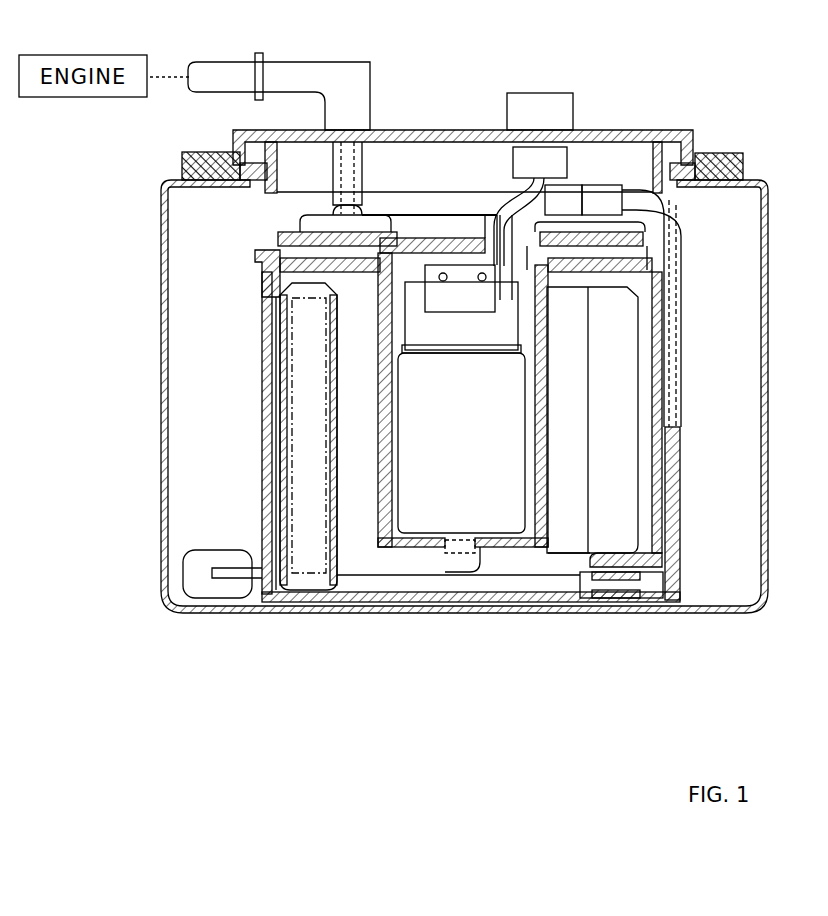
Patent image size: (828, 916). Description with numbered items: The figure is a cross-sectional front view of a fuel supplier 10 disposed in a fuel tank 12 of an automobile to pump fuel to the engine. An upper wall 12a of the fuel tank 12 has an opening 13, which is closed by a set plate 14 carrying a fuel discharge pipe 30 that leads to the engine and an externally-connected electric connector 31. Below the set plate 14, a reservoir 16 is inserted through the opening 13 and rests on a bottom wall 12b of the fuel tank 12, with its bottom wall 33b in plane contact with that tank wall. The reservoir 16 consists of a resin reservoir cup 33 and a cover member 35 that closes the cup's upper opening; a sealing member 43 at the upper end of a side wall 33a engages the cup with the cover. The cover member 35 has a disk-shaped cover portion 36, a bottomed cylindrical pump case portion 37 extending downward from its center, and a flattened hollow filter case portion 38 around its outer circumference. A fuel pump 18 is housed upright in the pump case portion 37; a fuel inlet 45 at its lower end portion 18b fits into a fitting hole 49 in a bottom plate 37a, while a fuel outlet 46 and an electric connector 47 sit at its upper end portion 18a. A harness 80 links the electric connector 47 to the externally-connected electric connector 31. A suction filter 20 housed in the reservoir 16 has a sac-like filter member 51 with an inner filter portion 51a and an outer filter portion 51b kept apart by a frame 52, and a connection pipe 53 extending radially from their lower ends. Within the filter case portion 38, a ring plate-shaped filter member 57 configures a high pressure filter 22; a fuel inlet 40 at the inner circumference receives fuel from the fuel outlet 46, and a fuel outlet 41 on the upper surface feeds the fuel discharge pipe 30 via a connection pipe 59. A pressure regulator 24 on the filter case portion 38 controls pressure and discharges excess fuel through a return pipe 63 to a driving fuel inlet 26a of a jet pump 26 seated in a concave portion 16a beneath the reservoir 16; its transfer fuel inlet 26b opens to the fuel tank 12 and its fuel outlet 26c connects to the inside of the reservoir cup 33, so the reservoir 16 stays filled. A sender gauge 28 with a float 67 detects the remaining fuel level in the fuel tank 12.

The fuel supplier 10 is at (486, 73).
The fuel tank 12 is at (767, 237).
The upper wall 12a is at (197, 173).
The bottom wall 12b is at (225, 614).
The opening 13 is at (272, 162).
The set plate 14 is at (427, 130).
The reservoir 16 is at (250, 362).
The concave portion 16a is at (623, 553).
The fuel pump 18 is at (513, 508).
The upper end portion 18a is at (425, 332).
The lower end portion 18b is at (505, 533).
The suction filter 20 is at (645, 372).
The high pressure filter 22 is at (386, 210).
The pressure regulator 24 is at (597, 183).
The jet pump 26 is at (686, 588).
The driving fuel inlet 26a is at (680, 558).
The transfer fuel inlet 26b is at (643, 608).
The fuel outlet 26c is at (594, 592).
The sender gauge 28 is at (198, 543).
The fuel discharge pipe 30 is at (285, 74).
The externally-connected electric connector 31 is at (540, 105).
The reservoir cup 33 is at (258, 438).
The side wall 33a is at (263, 475).
The bottom wall 33b is at (288, 612).
The cover member 35 is at (434, 212).
The cover portion 36 is at (502, 222).
The pump case portion 37 is at (540, 402).
The bottom plate 37a is at (413, 543).
The filter case portion 38 is at (287, 222).
The fuel inlet 40 is at (417, 243).
The fuel outlet 41 is at (347, 202).
The sealing member 43 is at (267, 270).
The fuel inlet 45 is at (460, 555).
The fuel outlet 46 is at (462, 303).
The electric connector 47 is at (503, 277).
The fitting hole 49 is at (460, 547).
The filter member 51 is at (617, 342).
The filter portion 51a is at (338, 467).
The filter portion 51b is at (278, 509).
The frame 52 is at (307, 402).
The connection pipe 53 is at (350, 562).
The filter member 57 is at (283, 240).
The connection pipe 59 is at (348, 167).
The return pipe 63 is at (680, 455).
The float 67 is at (197, 572).
The harness 80 is at (515, 202).